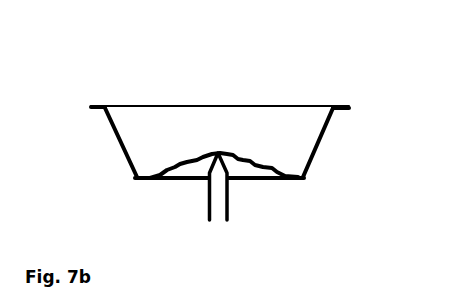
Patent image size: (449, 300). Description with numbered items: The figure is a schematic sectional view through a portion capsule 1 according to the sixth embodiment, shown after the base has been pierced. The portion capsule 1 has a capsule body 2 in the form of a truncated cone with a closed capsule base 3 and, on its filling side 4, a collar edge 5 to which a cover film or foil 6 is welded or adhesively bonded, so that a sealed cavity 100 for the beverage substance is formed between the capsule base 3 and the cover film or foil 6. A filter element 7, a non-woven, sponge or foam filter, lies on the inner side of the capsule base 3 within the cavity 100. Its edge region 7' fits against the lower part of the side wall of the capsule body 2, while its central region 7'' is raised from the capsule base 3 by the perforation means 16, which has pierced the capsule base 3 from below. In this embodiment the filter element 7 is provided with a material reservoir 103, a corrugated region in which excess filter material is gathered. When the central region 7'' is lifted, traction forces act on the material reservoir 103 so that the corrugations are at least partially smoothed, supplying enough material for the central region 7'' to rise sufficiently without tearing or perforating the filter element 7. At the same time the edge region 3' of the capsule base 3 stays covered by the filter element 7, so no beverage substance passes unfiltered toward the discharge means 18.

The portion capsule 1 is at (122, 75).
The capsule body 2 is at (127, 159).
The capsule base 3 is at (197, 209).
The edge region of the capsule base 3' is at (149, 209).
The filling side 4 is at (216, 101).
The collar edge 5 is at (340, 112).
The cover film or foil 6 is at (291, 106).
The filter element 7 is at (219, 125).
The edge region of the filter element 7' is at (95, 148).
The central region of the filter element 7'' is at (258, 85).
The perforation means 16 is at (227, 218).
The discharge means 18 is at (201, 185).
The cavity 100 is at (177, 114).
The material reservoir 103 is at (253, 163).